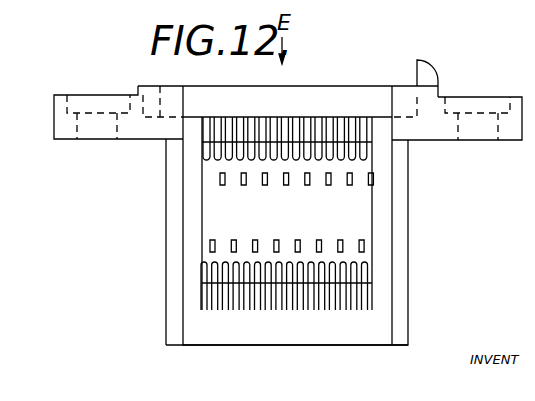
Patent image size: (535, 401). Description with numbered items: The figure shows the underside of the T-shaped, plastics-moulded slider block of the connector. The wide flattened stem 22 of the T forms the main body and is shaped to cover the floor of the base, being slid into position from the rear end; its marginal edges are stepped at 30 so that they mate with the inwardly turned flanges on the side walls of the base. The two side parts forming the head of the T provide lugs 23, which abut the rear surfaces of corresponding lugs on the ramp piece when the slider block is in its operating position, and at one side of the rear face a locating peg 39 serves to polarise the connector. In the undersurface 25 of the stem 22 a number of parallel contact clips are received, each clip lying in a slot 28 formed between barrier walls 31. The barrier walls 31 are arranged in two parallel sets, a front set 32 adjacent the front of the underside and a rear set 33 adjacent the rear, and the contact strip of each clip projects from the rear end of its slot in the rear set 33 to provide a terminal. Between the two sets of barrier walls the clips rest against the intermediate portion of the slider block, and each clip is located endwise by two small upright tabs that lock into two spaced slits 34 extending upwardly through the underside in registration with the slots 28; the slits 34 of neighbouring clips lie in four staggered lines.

The stem 22 is at (294, 335).
The lugs 23 is at (63, 123).
The undersurface 25 is at (355, 220).
The slot 28 is at (330, 128).
The stepped marginal edges 30 is at (183, 208).
The barrier walls 31 is at (290, 130).
The front set of barrier walls 32 is at (352, 288).
The rear set of barrier walls 33 is at (355, 143).
The slits 34 is at (213, 143).
The locating peg 39 is at (430, 80).